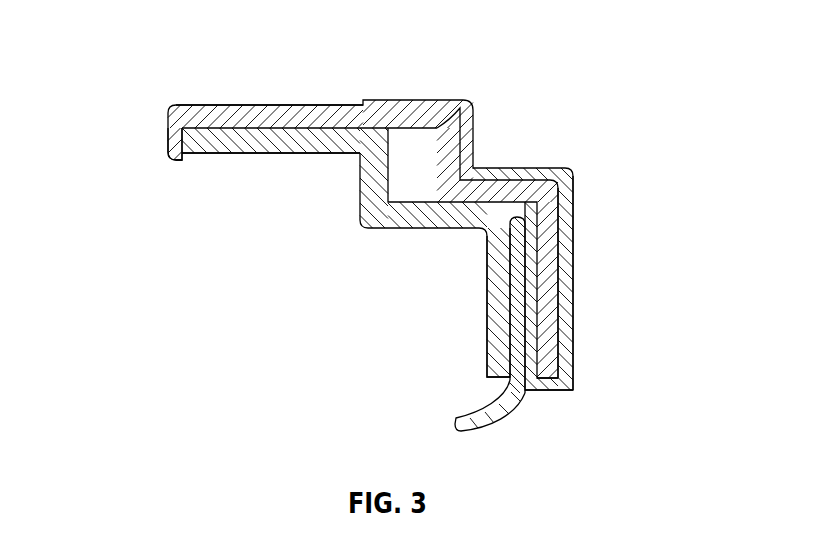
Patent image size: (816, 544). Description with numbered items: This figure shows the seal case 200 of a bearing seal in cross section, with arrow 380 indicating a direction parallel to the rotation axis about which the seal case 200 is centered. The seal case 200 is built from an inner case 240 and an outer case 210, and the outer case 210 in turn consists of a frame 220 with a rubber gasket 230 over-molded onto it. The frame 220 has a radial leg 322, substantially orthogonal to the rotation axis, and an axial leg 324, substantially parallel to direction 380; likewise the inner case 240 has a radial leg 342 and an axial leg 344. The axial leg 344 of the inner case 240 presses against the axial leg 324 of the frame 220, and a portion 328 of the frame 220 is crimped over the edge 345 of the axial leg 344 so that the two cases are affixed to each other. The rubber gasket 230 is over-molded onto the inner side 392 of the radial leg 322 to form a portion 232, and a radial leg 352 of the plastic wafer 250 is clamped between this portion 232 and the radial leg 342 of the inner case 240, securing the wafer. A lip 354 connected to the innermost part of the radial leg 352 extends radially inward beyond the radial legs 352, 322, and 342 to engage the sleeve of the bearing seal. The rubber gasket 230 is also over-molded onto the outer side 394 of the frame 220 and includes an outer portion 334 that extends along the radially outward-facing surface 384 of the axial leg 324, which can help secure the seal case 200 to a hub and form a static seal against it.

The seal case 200 is at (569, 57).
The outer case 210 is at (468, 88).
The frame 220 is at (337, 90).
The rubber gasket 230 is at (553, 396).
The portion of rubber gasket 232 is at (512, 349).
The inner case 240 is at (217, 168).
The plastic wafer 250 is at (443, 425).
The radial leg of frame 322 is at (574, 282).
The axial leg of frame 324 is at (316, 104).
The crimped portion of frame 328 is at (178, 143).
The outer portion of rubber gasket 334 is at (390, 100).
The radial leg of inner case 342 is at (487, 283).
The axial leg of inner case 344 is at (288, 153).
The edge of axial leg 345 is at (170, 148).
The radial leg of plastic wafer 352 is at (500, 316).
The lip 354 is at (496, 423).
The direction arrow 380 is at (367, 306).
The radially outward-facing surface of axial leg 384 is at (418, 99).
The inner side of radial leg 392 is at (526, 238).
The outer side of frame 394 is at (567, 228).